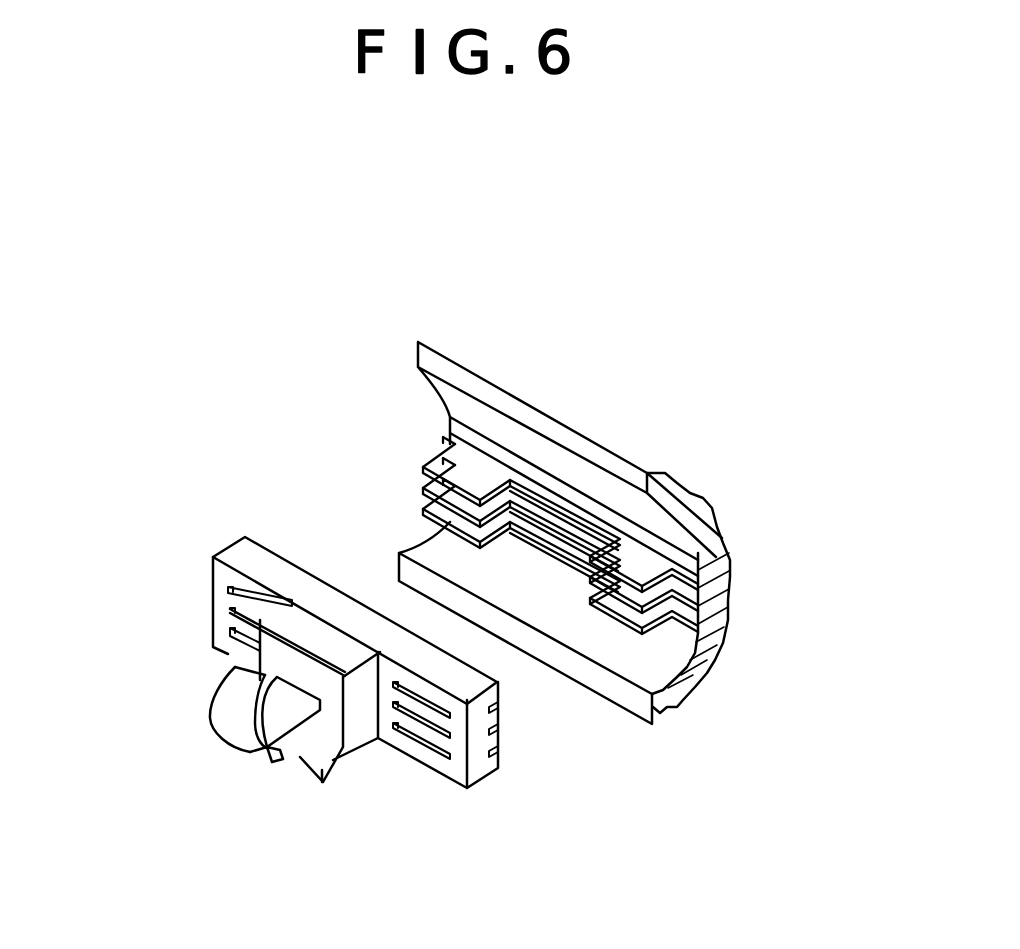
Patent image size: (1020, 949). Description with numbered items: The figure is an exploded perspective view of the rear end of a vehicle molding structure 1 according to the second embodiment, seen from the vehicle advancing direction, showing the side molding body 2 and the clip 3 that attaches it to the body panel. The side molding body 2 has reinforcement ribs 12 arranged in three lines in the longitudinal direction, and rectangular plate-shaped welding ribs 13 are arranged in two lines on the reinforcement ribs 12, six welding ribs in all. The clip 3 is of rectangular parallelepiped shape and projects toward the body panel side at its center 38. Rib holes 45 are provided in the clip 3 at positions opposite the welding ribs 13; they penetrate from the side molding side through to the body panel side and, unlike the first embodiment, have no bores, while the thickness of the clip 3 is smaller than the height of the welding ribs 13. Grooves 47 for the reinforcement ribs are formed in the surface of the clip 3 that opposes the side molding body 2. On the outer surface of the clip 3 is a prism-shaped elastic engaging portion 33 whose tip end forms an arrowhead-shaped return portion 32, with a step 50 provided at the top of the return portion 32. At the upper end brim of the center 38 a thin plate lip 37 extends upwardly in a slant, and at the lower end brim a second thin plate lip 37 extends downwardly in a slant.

The board-side connector 1 is at (690, 318).
The side molding body 2 is at (405, 312).
The clip 3 is at (183, 527).
The reinforcement ribs 12 is at (700, 600).
The welding ribs 13 is at (645, 571).
The return portion 32 is at (234, 681).
The elastic engaging portion 33 is at (296, 725).
The thin plate lip 37 is at (228, 589).
The center 38 is at (323, 633).
The rib holes 45 is at (420, 740).
The grooves 47 is at (498, 753).
The step 50 is at (237, 660).